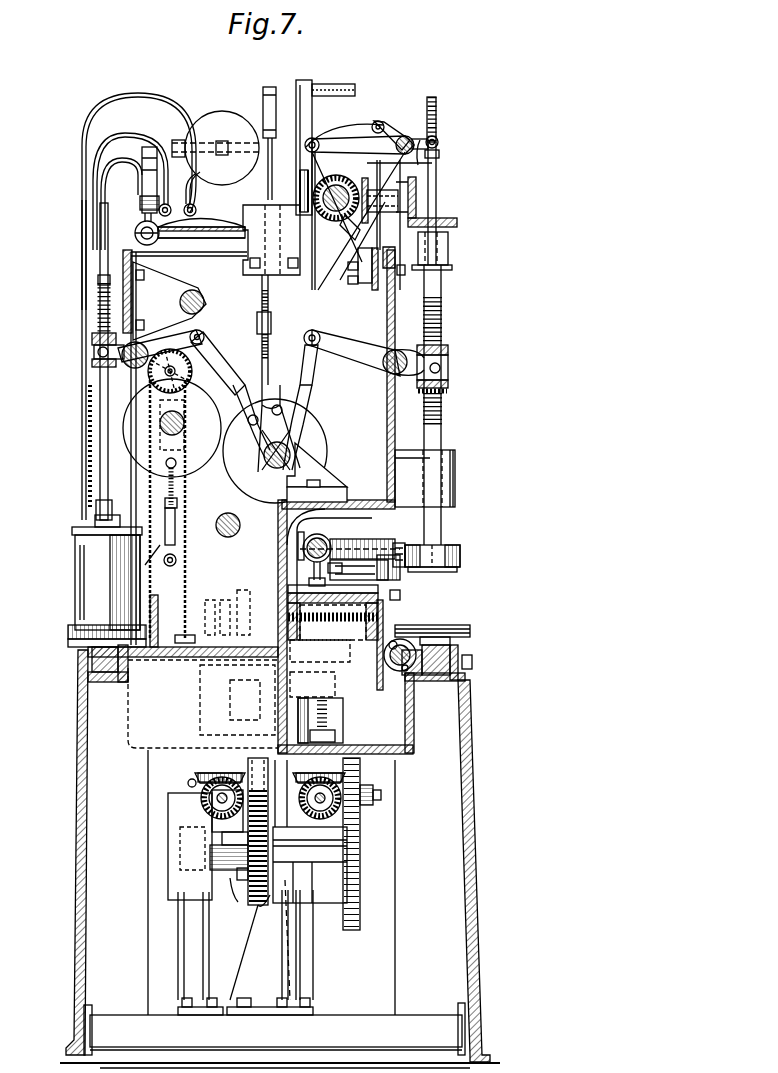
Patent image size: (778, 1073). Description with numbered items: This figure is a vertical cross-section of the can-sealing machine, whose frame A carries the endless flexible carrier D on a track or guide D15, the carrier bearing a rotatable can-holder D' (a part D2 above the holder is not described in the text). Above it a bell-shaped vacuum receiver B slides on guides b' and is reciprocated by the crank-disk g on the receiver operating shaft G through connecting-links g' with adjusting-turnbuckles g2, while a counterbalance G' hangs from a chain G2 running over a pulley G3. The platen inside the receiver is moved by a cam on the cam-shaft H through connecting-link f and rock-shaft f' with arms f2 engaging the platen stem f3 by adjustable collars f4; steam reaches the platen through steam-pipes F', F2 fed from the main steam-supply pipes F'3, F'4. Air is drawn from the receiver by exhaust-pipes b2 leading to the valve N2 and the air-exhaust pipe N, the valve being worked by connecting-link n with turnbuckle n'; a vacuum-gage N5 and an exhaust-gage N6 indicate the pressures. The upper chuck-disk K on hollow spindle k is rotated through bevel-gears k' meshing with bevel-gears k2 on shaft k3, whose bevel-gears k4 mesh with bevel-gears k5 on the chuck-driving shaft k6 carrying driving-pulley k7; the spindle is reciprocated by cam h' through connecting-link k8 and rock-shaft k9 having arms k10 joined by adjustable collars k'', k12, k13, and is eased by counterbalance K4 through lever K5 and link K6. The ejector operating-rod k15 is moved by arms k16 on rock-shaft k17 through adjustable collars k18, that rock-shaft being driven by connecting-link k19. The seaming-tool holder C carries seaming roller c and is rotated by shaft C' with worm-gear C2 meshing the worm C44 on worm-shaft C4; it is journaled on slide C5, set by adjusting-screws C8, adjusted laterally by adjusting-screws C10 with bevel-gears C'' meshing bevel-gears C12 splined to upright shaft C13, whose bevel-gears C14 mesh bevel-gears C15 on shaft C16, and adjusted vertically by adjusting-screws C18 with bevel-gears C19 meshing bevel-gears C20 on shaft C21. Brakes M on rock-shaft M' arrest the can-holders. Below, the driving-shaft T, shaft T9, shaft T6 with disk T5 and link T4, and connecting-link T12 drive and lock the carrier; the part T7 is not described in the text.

The steam-pipe F' is at (132, 200).
The steam-pipe F2 is at (93, 215).
The exhaust-pipe b2 is at (103, 195).
The vacuum-gage N5 is at (152, 160).
The air-exhaust pipe N is at (136, 238).
The main steam-supply pipe F'3 is at (192, 201).
The main steam-supply pipe F'4 is at (221, 197).
The counterbalance K4 is at (224, 122).
The exhaust-gage N6 is at (278, 90).
The lever K5 is at (360, 80).
The valve N2 is at (275, 248).
The chuck-driving shaft k6 is at (333, 175).
The driving-pulley k7 is at (350, 125).
The bevel-gear k5 is at (365, 175).
The rock-shaft k17 is at (405, 135).
The arm k16 is at (425, 135).
The operating-rod k15 is at (437, 118).
The adjustable collar k18 is at (438, 146).
The connecting-link k19 is at (370, 165).
The bevel-gear k2 is at (418, 200).
The bevel-gear k' is at (442, 237).
The bevel-gear k4 is at (352, 240).
The shaft k3 is at (385, 240).
The link K6 is at (320, 318).
The connecting-link k8 is at (348, 350).
The rock-shaft k9 is at (385, 375).
The adjustable collar k12 is at (448, 345).
The adjustable collar k'' is at (457, 356).
The arm k10 is at (440, 368).
The adjustable collar k13 is at (448, 388).
The hollow shaft or spindle k is at (434, 405).
The driving-shaft T is at (204, 302).
The connecting-link f is at (181, 343).
The adjustable collar f4 is at (110, 340).
The arm f2 is at (100, 352).
The rock-shaft f' is at (129, 374).
The stem f3 is at (104, 422).
The pulley G3 is at (185, 360).
The receiver operating shaft G is at (172, 428).
The crank-disk g is at (187, 426).
The adjusting-turnbuckle g2 is at (212, 500).
The connecting-link g' is at (180, 537).
The turnbuckle n' is at (255, 321).
The connecting-link n is at (256, 330).
The cam-shaft H is at (300, 452).
The cam h' is at (288, 428).
The vacuum chamber or receiver B is at (107, 577).
The guide b' is at (78, 505).
The rotatable can holder D' is at (261, 631).
The endless flexible carrier D is at (241, 685).
The track or guide D15 is at (455, 675).
The plate D2 is at (455, 630).
The frame A is at (472, 835).
The independently-adjustable slide C5 is at (300, 528).
The worm C44 is at (322, 540).
The shaft C' is at (350, 535).
The worm-gear C2 is at (397, 542).
The worm-shaft C4 is at (303, 548).
The seaming tool or roller c is at (400, 574).
The seaming-tool holder C is at (379, 577).
The adjusting-screw C8 is at (398, 598).
The adjusting-screw C10 is at (345, 625).
The bevel-gear C'' is at (246, 611).
The bevel-gear C12 is at (232, 615).
The chain G2 is at (195, 598).
The upright shaft C13 is at (239, 694).
The adjusting-screw C18 is at (322, 720).
The brake M is at (391, 629).
The rock-shaft M' is at (398, 670).
The upper chuck-disk K is at (462, 555).
The bevel-gear C14 is at (215, 790).
The shaft C16 is at (216, 798).
The bevel-gear C15 is at (228, 813).
The counterbalance G' is at (163, 846).
The connecting-link T12 is at (235, 830).
The shaft T9 is at (258, 831).
The shaft T6 is at (232, 880).
The rod T7 is at (265, 895).
The bevel-gear C19 is at (330, 775).
The bevel-gear C20 is at (373, 790).
The link T4 is at (381, 800).
The shaft C21 is at (326, 800).
The disk T5 is at (360, 888).